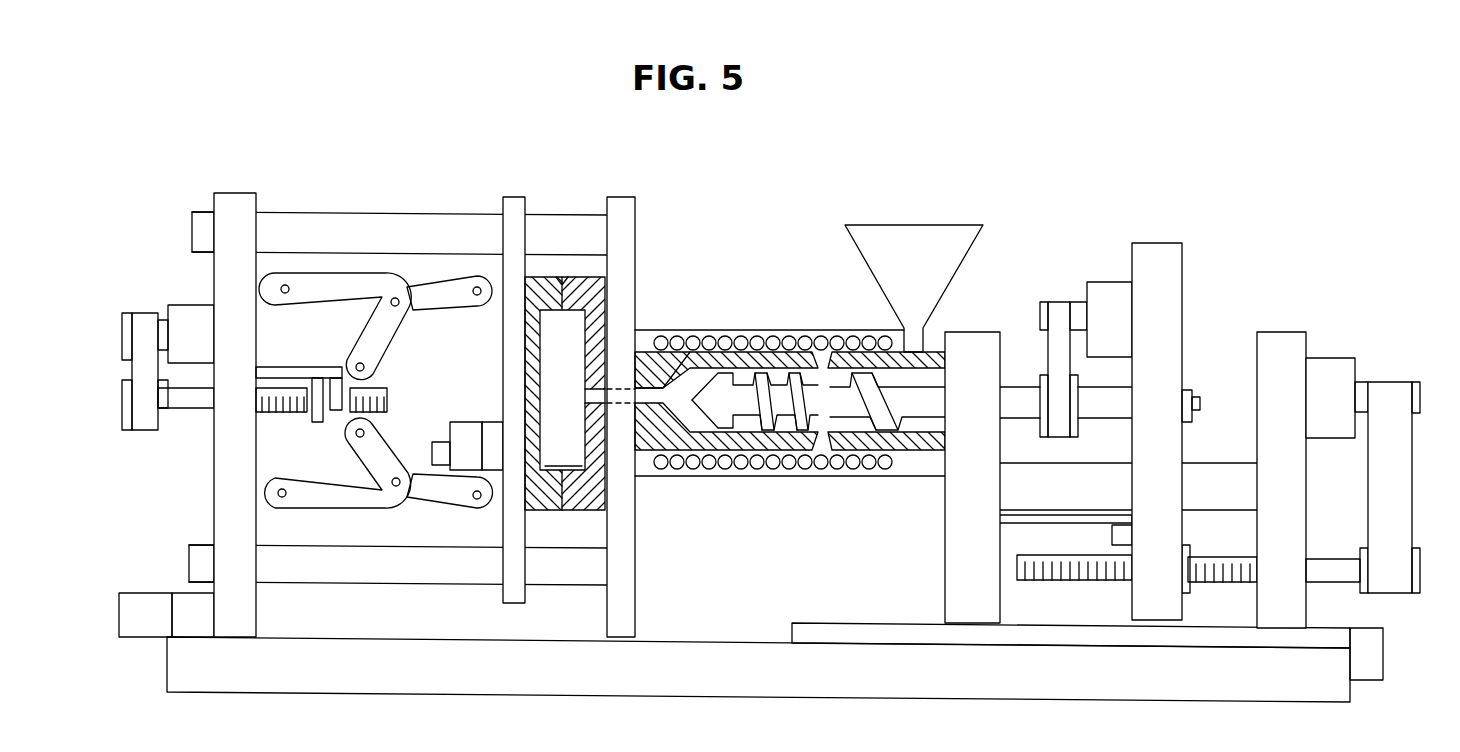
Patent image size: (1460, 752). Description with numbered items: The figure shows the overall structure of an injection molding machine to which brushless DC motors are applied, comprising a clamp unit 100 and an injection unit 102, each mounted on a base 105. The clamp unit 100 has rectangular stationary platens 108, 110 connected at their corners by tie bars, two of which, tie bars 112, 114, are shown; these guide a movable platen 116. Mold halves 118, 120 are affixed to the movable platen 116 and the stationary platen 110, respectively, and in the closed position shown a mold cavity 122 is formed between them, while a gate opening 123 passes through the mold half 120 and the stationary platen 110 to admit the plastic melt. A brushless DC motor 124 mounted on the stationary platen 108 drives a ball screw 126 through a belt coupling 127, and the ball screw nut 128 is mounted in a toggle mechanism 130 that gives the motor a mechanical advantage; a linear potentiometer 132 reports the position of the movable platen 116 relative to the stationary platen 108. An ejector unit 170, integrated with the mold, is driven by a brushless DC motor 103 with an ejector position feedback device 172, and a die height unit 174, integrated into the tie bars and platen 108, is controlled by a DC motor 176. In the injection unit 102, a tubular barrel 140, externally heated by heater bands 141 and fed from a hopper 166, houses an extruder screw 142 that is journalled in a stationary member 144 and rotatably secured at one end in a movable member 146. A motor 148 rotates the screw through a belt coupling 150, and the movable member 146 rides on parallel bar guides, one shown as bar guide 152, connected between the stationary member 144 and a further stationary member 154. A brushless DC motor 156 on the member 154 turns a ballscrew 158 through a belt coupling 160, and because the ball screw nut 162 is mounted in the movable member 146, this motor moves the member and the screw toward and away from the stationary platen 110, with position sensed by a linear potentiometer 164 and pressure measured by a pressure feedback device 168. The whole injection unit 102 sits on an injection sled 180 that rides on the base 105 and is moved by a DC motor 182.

The clamp unit 100 is at (320, 178).
The injection unit 102 is at (1203, 289).
The brushless DC motor 103 is at (463, 425).
The base 105 is at (690, 637).
The stationary platen 108 is at (232, 193).
The stationary platen 110 is at (621, 197).
The tie bar 112 is at (372, 222).
The tie bar 114 is at (385, 585).
The movable platen 116 is at (510, 197).
The mold half 118 is at (565, 345).
The mold half 120 is at (576, 310).
The mold cavity 122 is at (570, 454).
The gate opening 123 is at (596, 398).
The brushless DC motor 124 is at (186, 305).
The ball screw 126 is at (377, 390).
The belt coupling 127 is at (122, 375).
The ball screw nut 128 is at (318, 422).
The toggle mechanism 130 is at (390, 366).
The linear potentiometer 132 is at (335, 367).
The tubular barrel 140 is at (915, 452).
The heater bands 141 is at (776, 348).
The extruder screw 142 is at (706, 432).
The stationary member 144 is at (945, 565).
The movable member 146 is at (1152, 243).
The motor 148 is at (1102, 282).
The belt coupling 150 is at (1050, 361).
The bar guide 152 is at (1040, 463).
The stationary member 154 is at (1307, 506).
The brushless DC motor 156 is at (1333, 358).
The ballscrew 158 is at (1328, 558).
The belt coupling 160 is at (1415, 510).
The ball screw nut 162 is at (1188, 545).
The linear potentiometer 164 is at (1112, 533).
The hopper 166 is at (915, 225).
The pressure feedback device 168 is at (1197, 397).
The ejector unit 170 is at (488, 420).
The feedback device 172 is at (446, 442).
The die height unit 174 is at (184, 593).
The DC motor 176 is at (145, 637).
The injection sled 180 is at (836, 623).
The DC motor 182 is at (1385, 680).